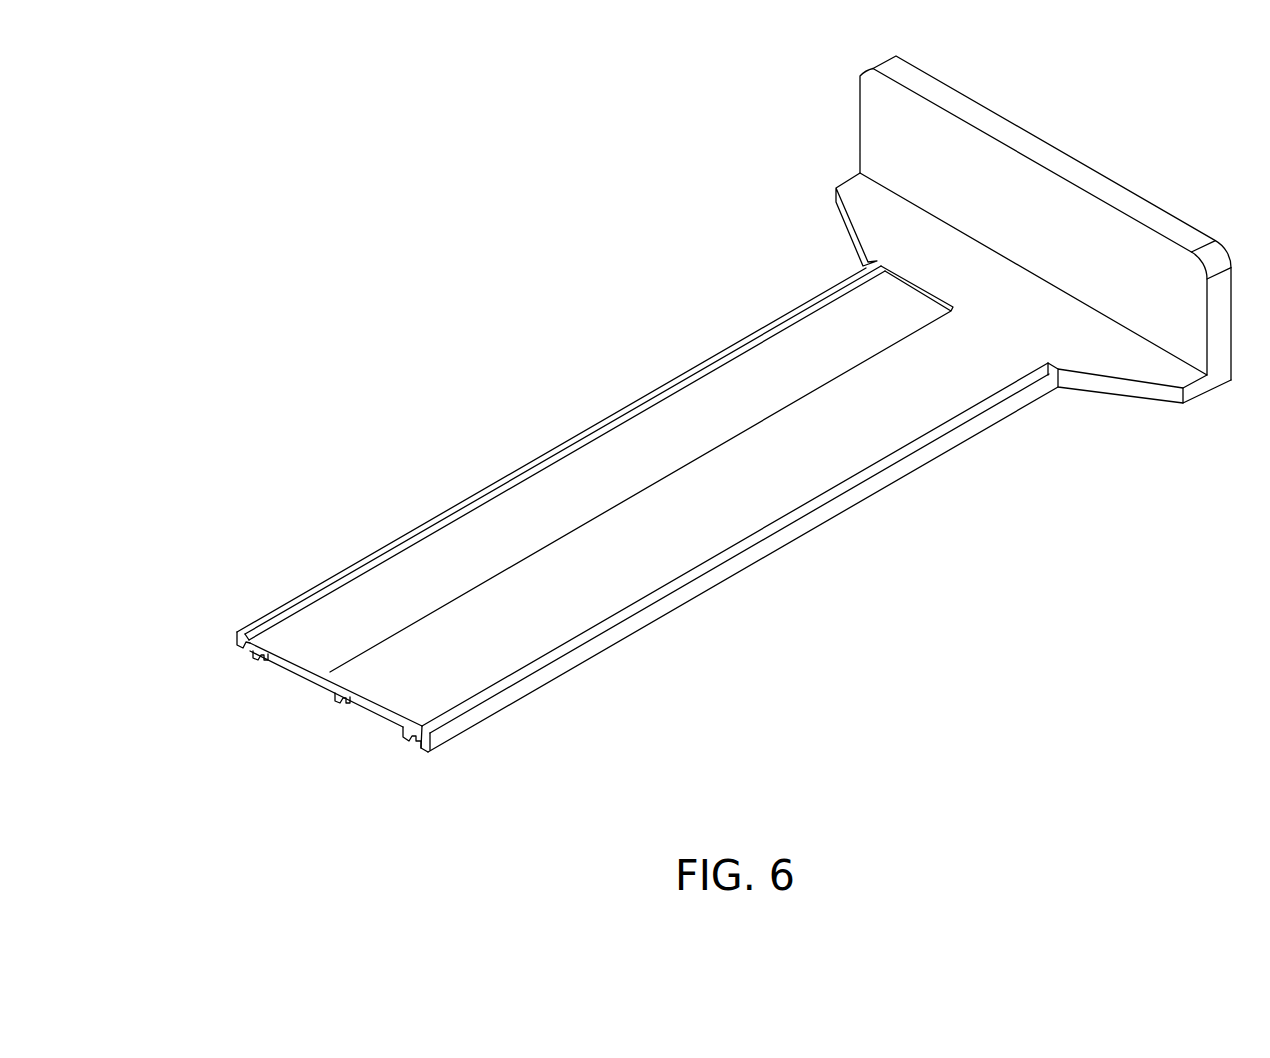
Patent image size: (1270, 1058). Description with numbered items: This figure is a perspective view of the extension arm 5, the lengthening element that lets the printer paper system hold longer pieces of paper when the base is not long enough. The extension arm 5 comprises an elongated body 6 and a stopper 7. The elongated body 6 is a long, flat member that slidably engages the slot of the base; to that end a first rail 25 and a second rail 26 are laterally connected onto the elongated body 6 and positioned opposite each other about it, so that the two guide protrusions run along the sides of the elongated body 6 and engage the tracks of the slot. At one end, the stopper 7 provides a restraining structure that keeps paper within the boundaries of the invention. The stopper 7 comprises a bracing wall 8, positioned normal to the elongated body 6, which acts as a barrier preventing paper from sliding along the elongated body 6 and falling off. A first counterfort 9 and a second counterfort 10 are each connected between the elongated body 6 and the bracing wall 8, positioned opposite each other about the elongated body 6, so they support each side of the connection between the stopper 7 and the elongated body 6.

The extension arm 5 is at (500, 190).
The elongated body 6 is at (610, 441).
The stopper 7 is at (770, 148).
The bracing wall 8 is at (872, 161).
The first counterfort 9 is at (1115, 392).
The second counterfort 10 is at (853, 233).
The first rail 25 is at (568, 682).
The second rail 26 is at (365, 545).